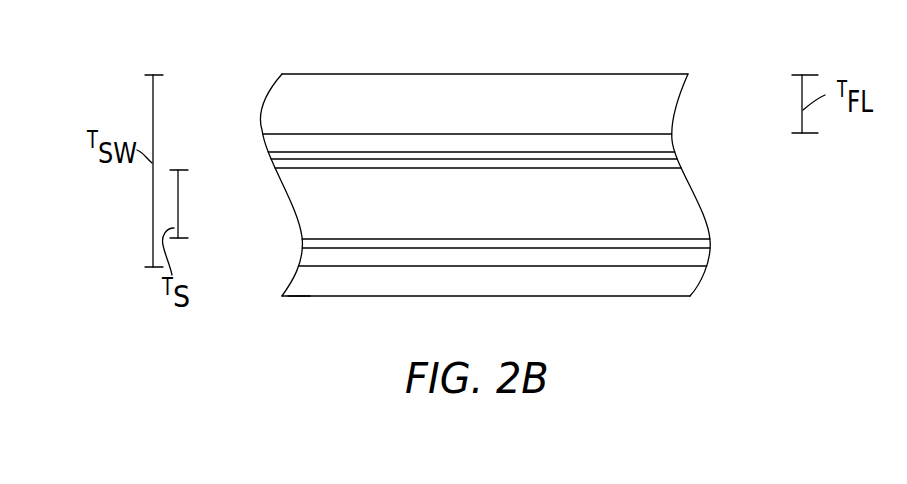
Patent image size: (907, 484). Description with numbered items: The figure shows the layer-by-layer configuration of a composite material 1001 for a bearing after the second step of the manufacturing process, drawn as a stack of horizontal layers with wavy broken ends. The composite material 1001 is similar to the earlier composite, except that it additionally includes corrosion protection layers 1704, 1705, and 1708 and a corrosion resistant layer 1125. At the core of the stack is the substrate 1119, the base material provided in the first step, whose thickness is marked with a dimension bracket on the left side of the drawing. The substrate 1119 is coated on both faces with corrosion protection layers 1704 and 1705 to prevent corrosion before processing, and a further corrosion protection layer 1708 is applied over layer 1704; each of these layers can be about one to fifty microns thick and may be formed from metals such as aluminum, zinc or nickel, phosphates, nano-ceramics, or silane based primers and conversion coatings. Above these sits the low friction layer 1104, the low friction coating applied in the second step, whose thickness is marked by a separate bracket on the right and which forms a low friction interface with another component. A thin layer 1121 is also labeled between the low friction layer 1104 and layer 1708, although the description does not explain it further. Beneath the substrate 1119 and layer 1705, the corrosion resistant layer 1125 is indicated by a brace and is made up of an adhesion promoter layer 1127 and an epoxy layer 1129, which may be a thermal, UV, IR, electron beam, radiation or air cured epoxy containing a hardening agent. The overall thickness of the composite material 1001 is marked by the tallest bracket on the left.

The composite material 1001 is at (571, 148).
The low friction layer 1104 is at (426, 100).
The tie layer 1121 is at (425, 126).
The corrosion protection layer 1708 is at (521, 136).
The corrosion protection layer 1704 is at (524, 173).
The substrate 1119 is at (455, 200).
The corrosion protection layer 1705 is at (552, 225).
The adhesion promoter layer 1127 is at (458, 240).
The epoxy layer 1129 is at (250, 270).
The corrosion resistant layer 1125 is at (541, 272).